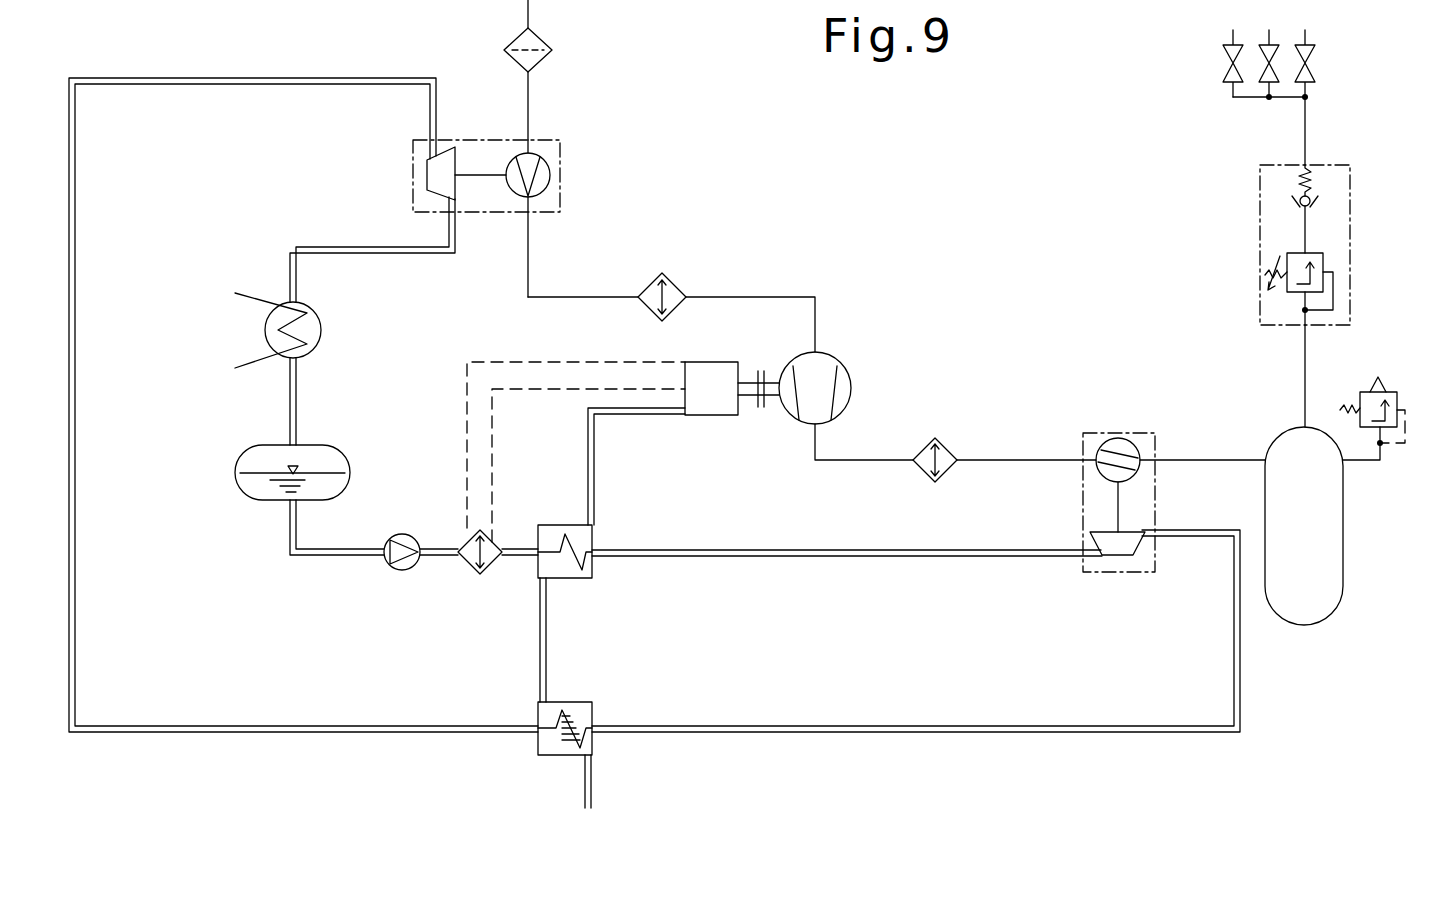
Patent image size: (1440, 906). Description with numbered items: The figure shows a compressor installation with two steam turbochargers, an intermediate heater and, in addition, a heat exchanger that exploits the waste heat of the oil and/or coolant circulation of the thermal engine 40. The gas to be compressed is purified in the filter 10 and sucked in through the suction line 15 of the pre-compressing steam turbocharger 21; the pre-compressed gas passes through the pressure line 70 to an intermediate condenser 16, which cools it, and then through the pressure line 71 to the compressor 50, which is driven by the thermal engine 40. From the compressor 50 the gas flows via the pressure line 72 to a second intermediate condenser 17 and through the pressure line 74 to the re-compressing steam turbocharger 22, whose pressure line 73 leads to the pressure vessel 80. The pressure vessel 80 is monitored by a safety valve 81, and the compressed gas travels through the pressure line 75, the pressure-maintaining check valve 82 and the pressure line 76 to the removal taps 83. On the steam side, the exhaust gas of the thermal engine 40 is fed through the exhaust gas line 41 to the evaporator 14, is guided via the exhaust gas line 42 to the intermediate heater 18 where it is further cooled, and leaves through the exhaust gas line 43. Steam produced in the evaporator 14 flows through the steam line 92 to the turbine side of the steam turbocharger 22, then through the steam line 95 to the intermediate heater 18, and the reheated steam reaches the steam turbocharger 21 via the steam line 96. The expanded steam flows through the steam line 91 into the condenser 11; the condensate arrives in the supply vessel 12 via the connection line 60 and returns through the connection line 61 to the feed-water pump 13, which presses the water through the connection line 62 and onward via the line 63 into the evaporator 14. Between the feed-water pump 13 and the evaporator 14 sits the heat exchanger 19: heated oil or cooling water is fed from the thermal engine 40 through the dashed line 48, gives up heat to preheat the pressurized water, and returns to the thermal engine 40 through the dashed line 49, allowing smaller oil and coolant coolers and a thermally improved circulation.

The filter 10 is at (543, 32).
The suction line 15 is at (531, 128).
The steam turbocharger 21 is at (560, 162).
The steam line 96 is at (165, 722).
The steam line 91 is at (413, 253).
The condenser 11 is at (264, 330).
The connection line 60 is at (291, 430).
The supply vessel 12 is at (252, 446).
The connection line 61 is at (362, 555).
The feed-water pump 13 is at (414, 569).
The connection line 62 is at (450, 521).
The heat exchanger 19 is at (497, 566).
The line 63 is at (530, 521).
The evaporator 14 is at (588, 580).
The line 49 is at (465, 452).
The line 48 is at (494, 458).
The exhaust gas line 41 is at (595, 470).
The thermal engine 40 is at (730, 360).
The compressor 50 is at (842, 362).
The pressure line 70 is at (539, 293).
The intermediate condenser 16 is at (683, 277).
The pressure line 71 is at (745, 296).
The pressure line 72 is at (840, 456).
The intermediate condenser 17 is at (948, 440).
The pressure line 74 is at (992, 458).
The steam turbocharger 22 is at (1143, 433).
The pressure line 73 is at (1190, 460).
The steam line 92 is at (885, 558).
The steam line 95 is at (815, 724).
The exhaust gas line 42 is at (537, 598).
The intermediate heater 18 is at (592, 676).
The exhaust gas line 43 is at (593, 798).
The pressure vessel 80 is at (1343, 556).
The pressure line 75 is at (1307, 398).
The pressure line 76 is at (1308, 157).
The removal taps 83 is at (1310, 36).
The pressure-maintaining check valve 82 is at (1352, 209).
The safety valve 81 is at (1398, 398).